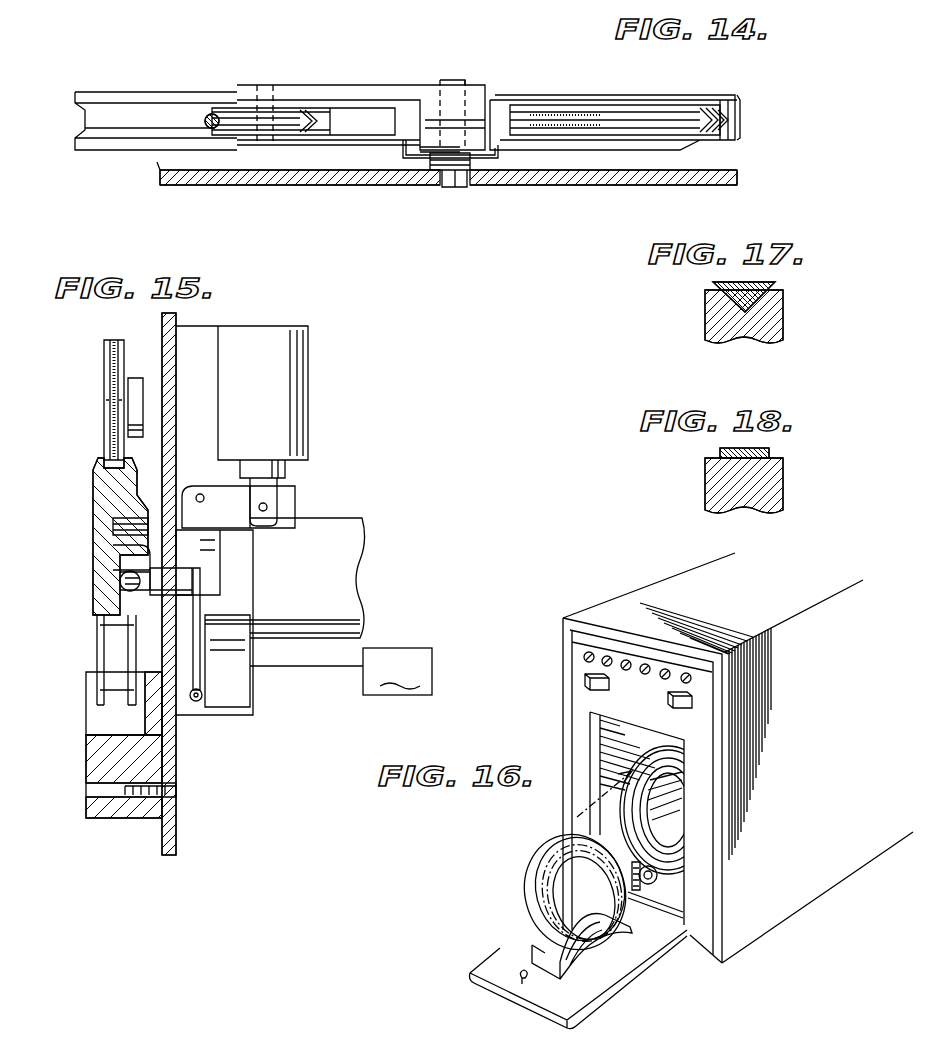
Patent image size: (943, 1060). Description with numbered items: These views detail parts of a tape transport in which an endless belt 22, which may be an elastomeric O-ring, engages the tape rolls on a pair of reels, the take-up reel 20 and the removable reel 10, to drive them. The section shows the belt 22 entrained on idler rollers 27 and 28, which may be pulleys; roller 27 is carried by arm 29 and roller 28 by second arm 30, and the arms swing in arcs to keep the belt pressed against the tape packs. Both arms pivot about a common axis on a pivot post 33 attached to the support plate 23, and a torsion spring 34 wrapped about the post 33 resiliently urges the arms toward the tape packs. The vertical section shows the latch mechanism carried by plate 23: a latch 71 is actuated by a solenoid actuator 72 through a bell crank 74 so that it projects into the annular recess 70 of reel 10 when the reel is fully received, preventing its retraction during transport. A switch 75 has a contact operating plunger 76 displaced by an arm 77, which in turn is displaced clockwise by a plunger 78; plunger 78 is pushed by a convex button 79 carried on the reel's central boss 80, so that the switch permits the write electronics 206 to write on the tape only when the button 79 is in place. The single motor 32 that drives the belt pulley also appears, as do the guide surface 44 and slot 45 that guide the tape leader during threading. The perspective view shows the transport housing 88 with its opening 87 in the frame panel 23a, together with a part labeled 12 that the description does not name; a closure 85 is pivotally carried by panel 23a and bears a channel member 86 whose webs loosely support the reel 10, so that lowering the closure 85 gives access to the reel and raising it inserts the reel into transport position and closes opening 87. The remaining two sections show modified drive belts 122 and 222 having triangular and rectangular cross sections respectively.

In FIG. 14, the reel 20 is at (105, 88).
In FIG. 14, the second arm 30 is at (286, 85).
In FIG. 14, the idler roller 28 is at (300, 130).
In FIG. 14, the support plate 23 is at (215, 186).
In FIG. 15, the support plate 23 is at (170, 766).
In FIG. 14, the torsion spring 34 is at (420, 162).
In FIG. 14, the pivot post 33 is at (447, 180).
In FIG. 14, the reel 10 is at (760, 106).
In FIG. 15, the reel 10 is at (85, 484).
In FIG. 16, the reel 10 is at (688, 760).
In FIG. 14, the idler roller 27 is at (598, 108).
In FIG. 15, the idler roller 27 is at (105, 414).
In FIG. 17, the idler roller 27 is at (705, 325).
In FIG. 18, the idler roller 27 is at (770, 496).
In FIG. 14, the endless belt 22 is at (716, 120).
In FIG. 15, the endless belt 22 is at (105, 372).
In FIG. 15, the solenoid actuator 72 is at (280, 358).
In FIG. 15, the bell crank 74 is at (225, 488).
In FIG. 15, the latch 71 is at (205, 552).
In FIG. 15, the switch 75 is at (232, 686).
In FIG. 15, the plunger 78 is at (185, 578).
In FIG. 15, the arm 77 is at (200, 603).
In FIG. 15, the contact operating plunger 76 is at (205, 626).
In FIG. 15, the motor 32 is at (348, 580).
In FIG. 15, the write electronics 206 is at (341, 671).
In FIG. 15, the arm 29 is at (135, 378).
In FIG. 15, the annular recess 70 is at (120, 528).
In FIG. 15, the central boss 80 is at (135, 553).
In FIG. 15, the convex button 79 is at (138, 587).
In FIG. 15, the slot 45 is at (125, 718).
In FIG. 15, the guide surface 44 is at (115, 760).
In FIG. 17, the modified drive belt 122 is at (765, 284).
In FIG. 18, the modified drive belt 222 is at (770, 452).
In FIG. 16, the transport housing 88 is at (622, 604).
In FIG. 16, the opening 87 is at (600, 740).
In FIG. 16, the knob 12 is at (648, 818).
In FIG. 16, the closure 85 is at (500, 958).
In FIG. 16, the channel member 86 is at (595, 945).
In FIG. 16, the frame panel 23a is at (700, 905).